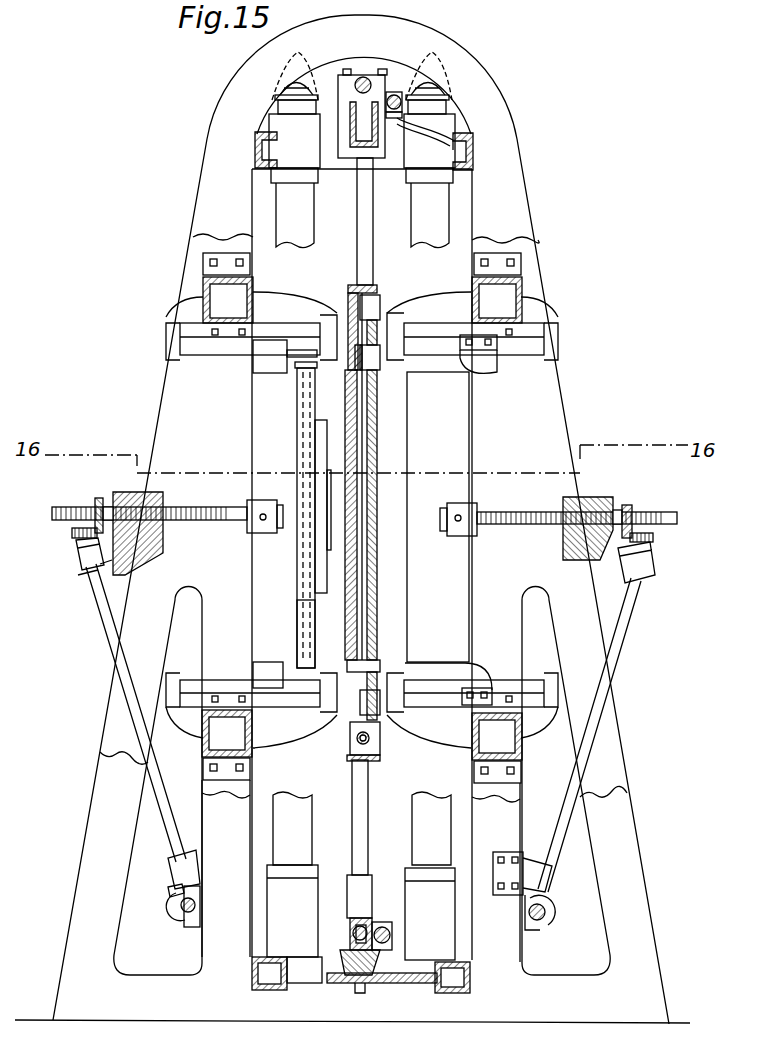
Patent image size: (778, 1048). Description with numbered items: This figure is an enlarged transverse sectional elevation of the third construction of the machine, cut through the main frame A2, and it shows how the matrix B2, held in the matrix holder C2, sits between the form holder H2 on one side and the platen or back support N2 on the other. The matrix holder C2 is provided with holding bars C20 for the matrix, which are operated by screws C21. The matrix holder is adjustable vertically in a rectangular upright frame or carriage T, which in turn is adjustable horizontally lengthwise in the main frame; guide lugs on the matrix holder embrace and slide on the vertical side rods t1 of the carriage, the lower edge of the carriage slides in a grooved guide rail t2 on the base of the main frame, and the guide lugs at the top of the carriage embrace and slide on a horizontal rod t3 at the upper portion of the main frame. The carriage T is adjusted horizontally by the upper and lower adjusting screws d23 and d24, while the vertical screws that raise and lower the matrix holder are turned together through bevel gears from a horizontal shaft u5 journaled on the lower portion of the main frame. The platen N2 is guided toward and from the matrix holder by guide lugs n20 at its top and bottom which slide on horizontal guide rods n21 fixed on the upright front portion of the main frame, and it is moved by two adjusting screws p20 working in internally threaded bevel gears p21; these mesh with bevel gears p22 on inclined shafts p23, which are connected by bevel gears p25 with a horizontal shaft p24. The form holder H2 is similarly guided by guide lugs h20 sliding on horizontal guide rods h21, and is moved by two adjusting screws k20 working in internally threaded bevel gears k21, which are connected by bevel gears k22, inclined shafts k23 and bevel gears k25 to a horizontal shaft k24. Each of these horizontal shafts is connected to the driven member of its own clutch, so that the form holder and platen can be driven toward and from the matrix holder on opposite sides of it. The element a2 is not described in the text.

The horizontal rod t3 is at (360, 77).
The upper adjusting screw d23 is at (394, 94).
The main frame A2 is at (298, 222).
The vertical side rod t1 is at (366, 235).
The matrix holder C2 is at (353, 291).
The screw C21 is at (377, 550).
The holding bar C20 is at (366, 356).
The horizontal guide rod h21 is at (197, 345).
The guide lug h20 is at (262, 355).
The horizontal guide rod n21 is at (437, 348).
The guide lug n20 is at (485, 362).
The form holder H2 is at (300, 458).
The plate a2 is at (318, 568).
The matrix B2 is at (348, 642).
The platen or back support N2 is at (417, 604).
The adjusting screw k20 is at (215, 500).
The internally threaded bevel gear k21 is at (100, 503).
The bevel gear k22 is at (74, 534).
The inclined shaft k23 is at (120, 622).
The horizontal shaft k24 is at (188, 925).
The bevel gear k25 is at (173, 900).
The adjusting screw p20 is at (660, 516).
The internally threaded bevel gear p21 is at (628, 508).
The bevel gear p22 is at (655, 539).
The inclined shaft p23 is at (622, 632).
The horizontal shaft p24 is at (530, 928).
The bevel gear p25 is at (556, 908).
The horizontal shaft u5 is at (370, 910).
The carriage T is at (352, 912).
The grooved guide rail t2 is at (350, 948).
The lower adjusting screw d24 is at (392, 932).